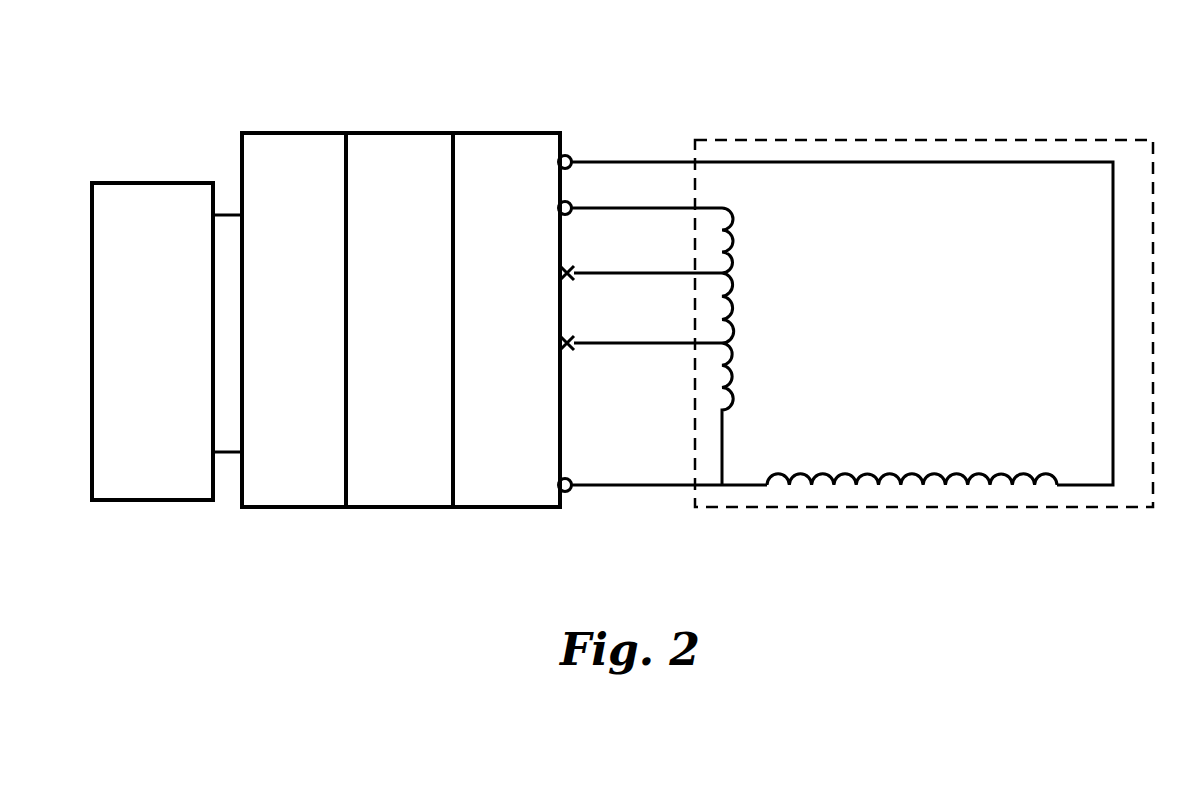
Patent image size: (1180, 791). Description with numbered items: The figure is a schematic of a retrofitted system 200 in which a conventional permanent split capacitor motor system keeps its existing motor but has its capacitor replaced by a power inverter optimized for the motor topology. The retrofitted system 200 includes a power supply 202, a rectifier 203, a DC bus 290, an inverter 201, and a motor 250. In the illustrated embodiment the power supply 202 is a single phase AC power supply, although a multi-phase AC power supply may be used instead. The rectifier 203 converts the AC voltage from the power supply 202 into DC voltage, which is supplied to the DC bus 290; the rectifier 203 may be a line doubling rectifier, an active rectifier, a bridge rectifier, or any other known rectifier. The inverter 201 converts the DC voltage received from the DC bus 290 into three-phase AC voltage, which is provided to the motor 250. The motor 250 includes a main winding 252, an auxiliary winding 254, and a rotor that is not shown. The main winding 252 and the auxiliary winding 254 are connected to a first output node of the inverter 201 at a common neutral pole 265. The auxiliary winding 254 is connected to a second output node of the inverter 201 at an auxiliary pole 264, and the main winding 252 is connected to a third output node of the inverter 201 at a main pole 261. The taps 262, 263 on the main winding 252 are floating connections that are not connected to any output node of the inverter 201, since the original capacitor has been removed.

The retrofitted system 200 is at (238, 64).
The power supply 202 is at (167, 341).
The rectifier 203 is at (294, 320).
The DC bus 290 is at (399, 320).
The inverter 201 is at (506, 320).
The auxiliary pole 264 is at (571, 152).
The main pole 261 is at (571, 199).
The tap 262 is at (571, 266).
The tap 263 is at (571, 333).
The common neutral pole 265 is at (571, 477).
The motor 250 is at (940, 138).
The main winding 252 is at (741, 258).
The auxiliary winding 254 is at (888, 463).